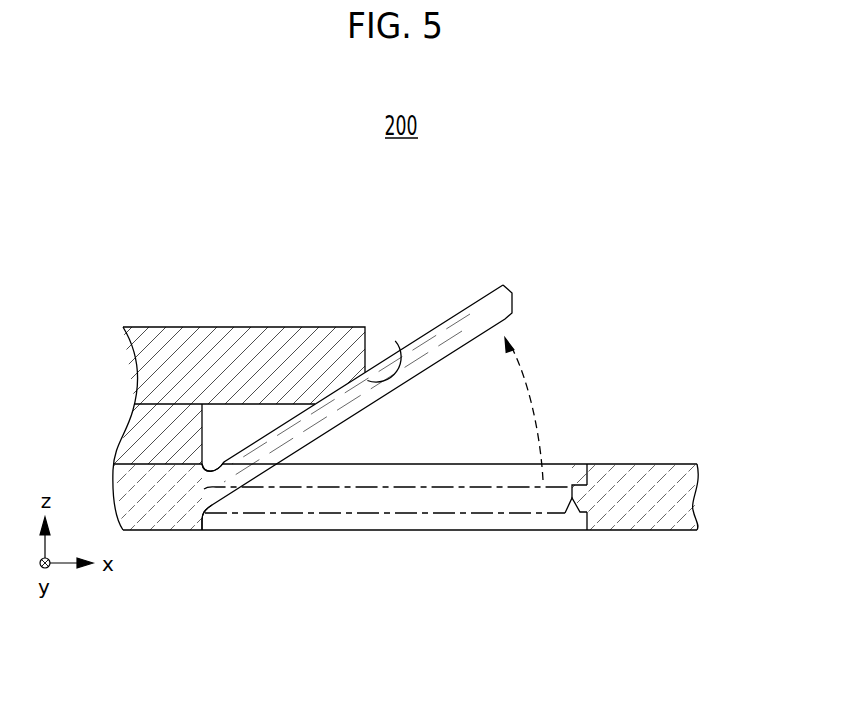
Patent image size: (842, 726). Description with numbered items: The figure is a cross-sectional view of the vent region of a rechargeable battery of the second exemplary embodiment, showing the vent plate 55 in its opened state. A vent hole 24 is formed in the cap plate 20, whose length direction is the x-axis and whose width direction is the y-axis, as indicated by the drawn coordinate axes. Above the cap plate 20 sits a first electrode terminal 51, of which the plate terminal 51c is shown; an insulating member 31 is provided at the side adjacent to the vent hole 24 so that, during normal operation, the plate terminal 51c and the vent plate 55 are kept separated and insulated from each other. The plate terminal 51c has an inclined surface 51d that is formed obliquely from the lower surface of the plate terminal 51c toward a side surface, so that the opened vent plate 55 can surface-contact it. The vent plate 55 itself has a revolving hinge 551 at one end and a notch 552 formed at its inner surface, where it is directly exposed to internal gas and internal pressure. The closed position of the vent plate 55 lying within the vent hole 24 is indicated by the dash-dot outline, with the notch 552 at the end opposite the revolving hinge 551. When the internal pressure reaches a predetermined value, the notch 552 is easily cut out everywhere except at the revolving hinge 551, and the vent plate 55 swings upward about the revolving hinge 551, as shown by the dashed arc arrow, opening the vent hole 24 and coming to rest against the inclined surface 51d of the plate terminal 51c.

The cap plate 20 is at (663, 512).
The vent hole 24 is at (574, 472).
The insulating member 31 is at (160, 452).
The first electrode terminal 51 is at (239, 422).
The plate terminal 51c is at (257, 348).
The inclined surface 51d is at (395, 341).
The vent plate 55 is at (477, 316).
The revolving hinge 551 is at (203, 487).
The notch 552 is at (567, 516).